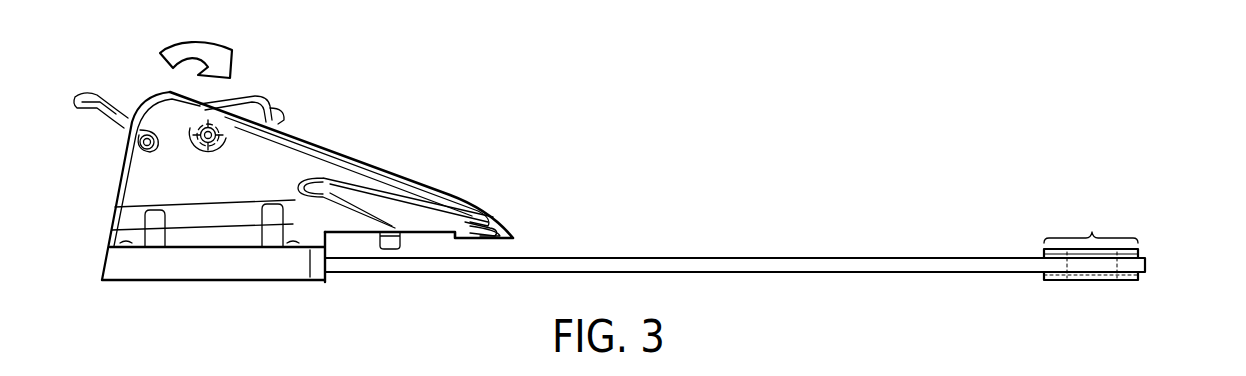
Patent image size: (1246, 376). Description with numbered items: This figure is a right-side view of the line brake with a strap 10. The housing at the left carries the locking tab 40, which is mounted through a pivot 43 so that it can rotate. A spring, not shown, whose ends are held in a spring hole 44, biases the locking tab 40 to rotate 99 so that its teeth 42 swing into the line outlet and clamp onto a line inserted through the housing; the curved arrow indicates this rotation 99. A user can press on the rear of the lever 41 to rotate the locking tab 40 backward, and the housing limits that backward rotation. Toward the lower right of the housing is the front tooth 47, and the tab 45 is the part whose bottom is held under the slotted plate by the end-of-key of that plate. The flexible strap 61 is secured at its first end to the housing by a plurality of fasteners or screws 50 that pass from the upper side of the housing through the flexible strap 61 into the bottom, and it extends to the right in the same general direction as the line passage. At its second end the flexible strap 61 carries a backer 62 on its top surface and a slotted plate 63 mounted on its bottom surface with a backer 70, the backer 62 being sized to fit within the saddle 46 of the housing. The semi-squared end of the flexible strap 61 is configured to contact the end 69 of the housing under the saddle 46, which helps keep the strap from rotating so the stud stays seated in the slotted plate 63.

The line brake with a strap 10 is at (850, 121).
The locking tab 40 is at (77, 103).
The lever 41 is at (253, 98).
The teeth 42 is at (273, 117).
The pivot 43 is at (205, 132).
The spring hole 44 is at (145, 142).
The tab 45 is at (397, 250).
The saddle 46 is at (443, 228).
The front tooth 47 is at (497, 233).
The fasteners or screws 50 is at (282, 375).
The flexible strap 61 is at (913, 273).
The backer 62 is at (1095, 250).
The slotted plate 63 is at (1062, 280).
The end of the housing 69 is at (327, 246).
The backer 70 is at (1090, 230).
The rotation 99 is at (215, 44).